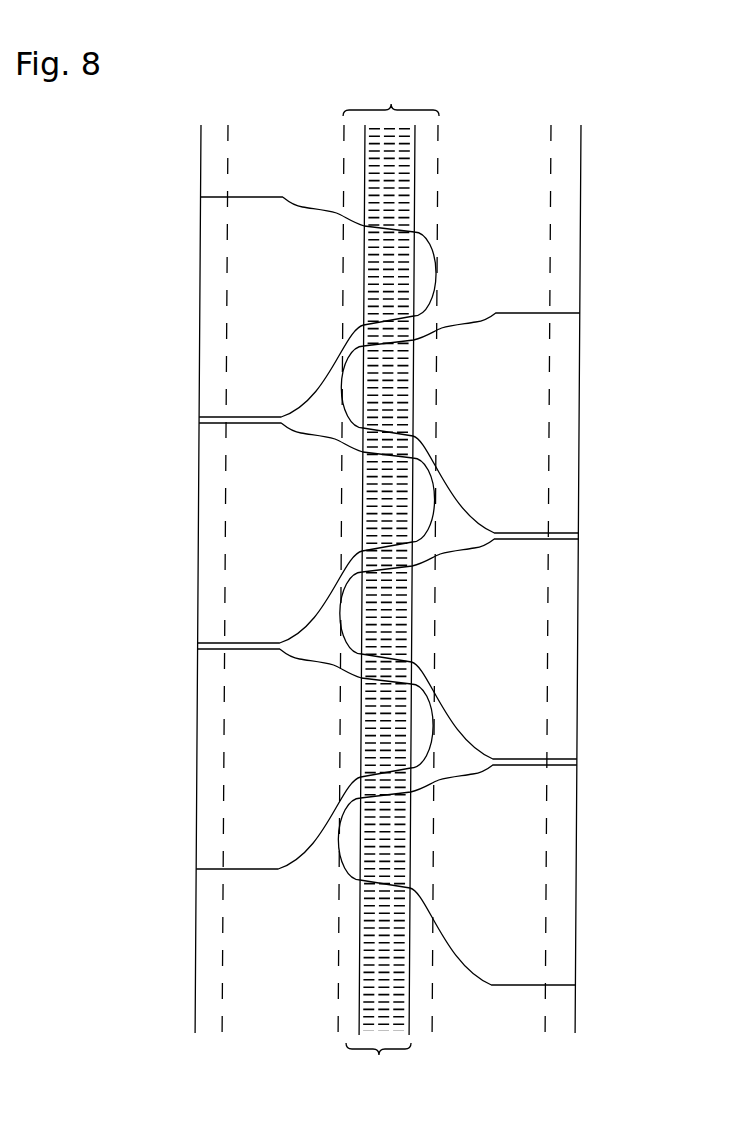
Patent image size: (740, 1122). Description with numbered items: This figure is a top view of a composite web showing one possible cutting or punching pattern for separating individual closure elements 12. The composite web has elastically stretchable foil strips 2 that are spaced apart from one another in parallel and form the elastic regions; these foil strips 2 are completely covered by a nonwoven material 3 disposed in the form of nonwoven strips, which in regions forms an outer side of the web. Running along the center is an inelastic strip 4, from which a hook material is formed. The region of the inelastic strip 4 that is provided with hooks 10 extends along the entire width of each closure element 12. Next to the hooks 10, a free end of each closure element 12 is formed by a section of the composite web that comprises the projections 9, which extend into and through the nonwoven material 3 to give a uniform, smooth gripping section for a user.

The foil strip 2 is at (243, 987).
The nonwoven material 3 is at (518, 254).
The inelastic strip 4 is at (391, 95).
The projections 9 is at (378, 1067).
The hooks 10 is at (407, 157).
The closure element 12 is at (273, 776).